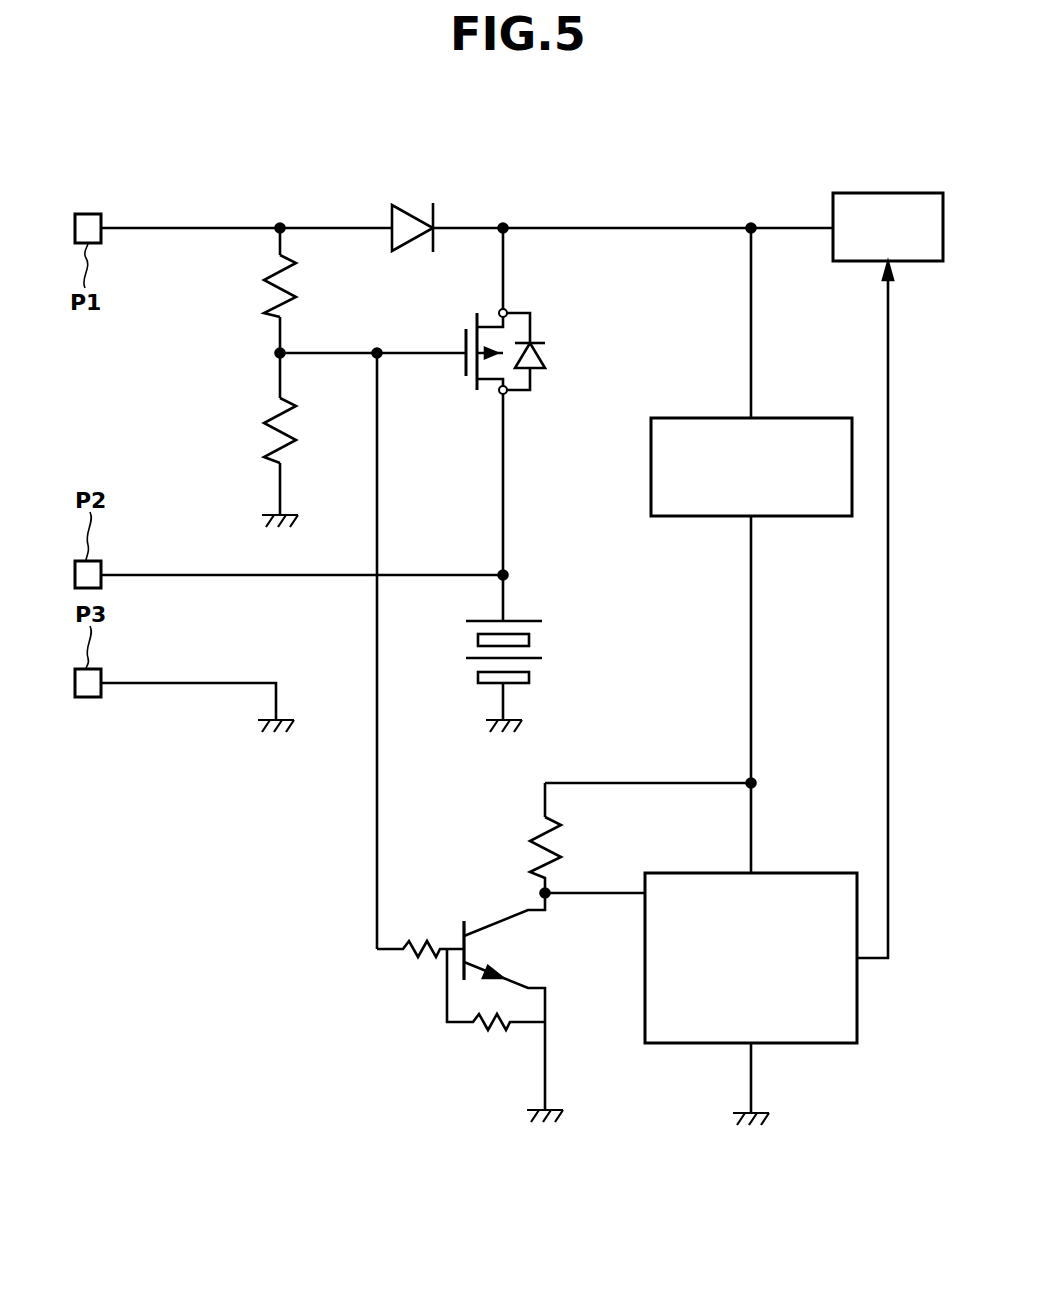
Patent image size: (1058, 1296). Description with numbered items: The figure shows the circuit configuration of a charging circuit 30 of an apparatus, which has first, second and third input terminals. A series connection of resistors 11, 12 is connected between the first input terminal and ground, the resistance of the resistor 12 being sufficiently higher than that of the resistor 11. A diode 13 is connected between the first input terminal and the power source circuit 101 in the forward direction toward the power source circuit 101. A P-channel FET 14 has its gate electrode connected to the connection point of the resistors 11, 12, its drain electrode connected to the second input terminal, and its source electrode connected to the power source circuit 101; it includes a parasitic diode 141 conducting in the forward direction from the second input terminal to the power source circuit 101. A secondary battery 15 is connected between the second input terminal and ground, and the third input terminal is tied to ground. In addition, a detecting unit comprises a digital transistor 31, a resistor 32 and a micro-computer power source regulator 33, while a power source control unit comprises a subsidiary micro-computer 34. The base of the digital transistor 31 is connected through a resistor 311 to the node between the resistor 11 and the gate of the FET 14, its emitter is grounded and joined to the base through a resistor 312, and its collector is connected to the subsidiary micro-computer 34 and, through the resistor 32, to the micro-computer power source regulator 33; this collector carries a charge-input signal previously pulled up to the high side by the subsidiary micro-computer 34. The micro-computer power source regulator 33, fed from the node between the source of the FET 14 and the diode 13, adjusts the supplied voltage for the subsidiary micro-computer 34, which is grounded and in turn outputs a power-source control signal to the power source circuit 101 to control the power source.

The resistor 11 is at (273, 280).
The resistor 12 is at (273, 428).
The diode 13 is at (408, 203).
The FET 14 is at (462, 333).
The parasitic diode 141 is at (540, 372).
The secondary battery 15 is at (528, 618).
The charging circuit 30 is at (574, 188).
The digital transistor 31 is at (461, 924).
The resistor 311 is at (414, 955).
The resistor 312 is at (496, 1028).
The resistor 32 is at (542, 828).
The micro-computer power source regulator 33 is at (804, 417).
The subsidiary micro-computer 34 is at (805, 872).
The power source circuit 101 is at (830, 212).